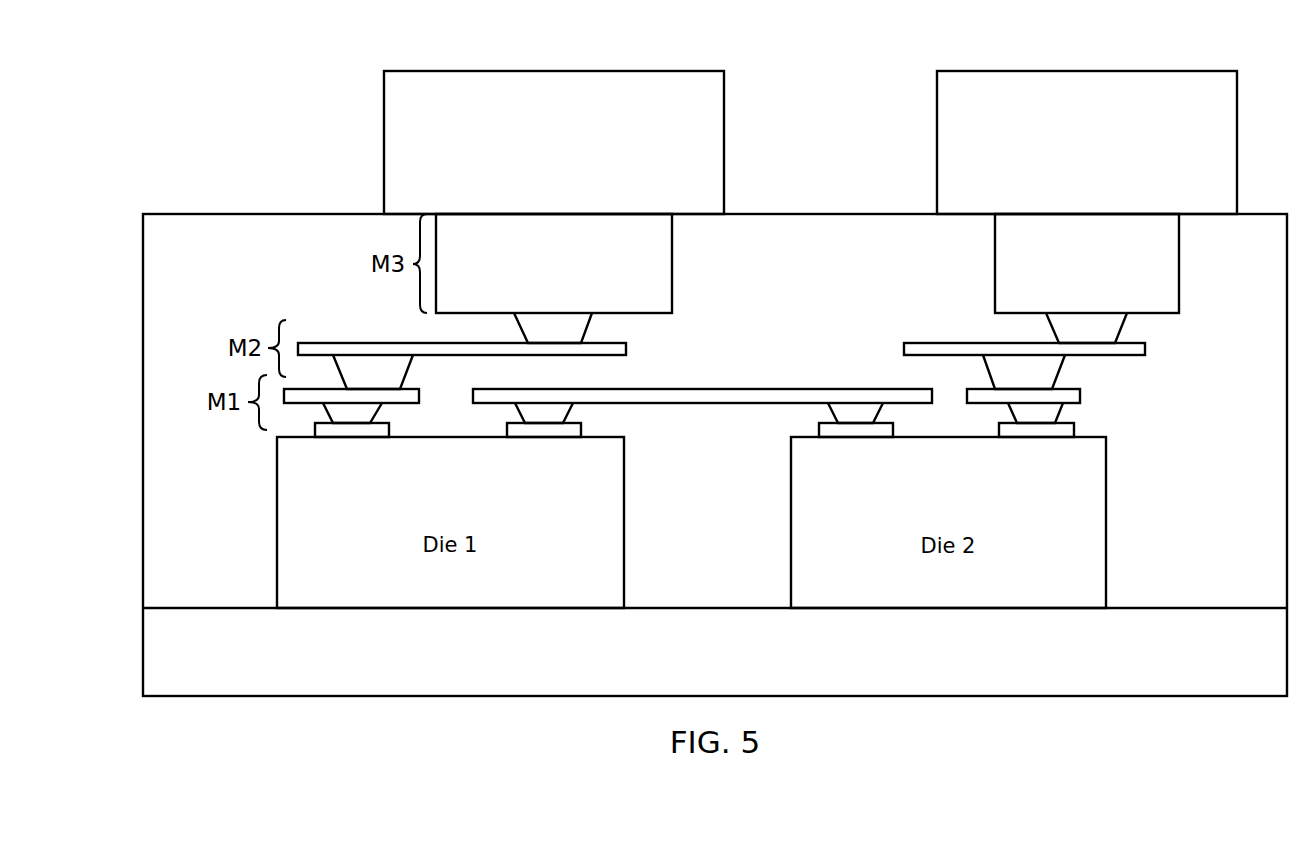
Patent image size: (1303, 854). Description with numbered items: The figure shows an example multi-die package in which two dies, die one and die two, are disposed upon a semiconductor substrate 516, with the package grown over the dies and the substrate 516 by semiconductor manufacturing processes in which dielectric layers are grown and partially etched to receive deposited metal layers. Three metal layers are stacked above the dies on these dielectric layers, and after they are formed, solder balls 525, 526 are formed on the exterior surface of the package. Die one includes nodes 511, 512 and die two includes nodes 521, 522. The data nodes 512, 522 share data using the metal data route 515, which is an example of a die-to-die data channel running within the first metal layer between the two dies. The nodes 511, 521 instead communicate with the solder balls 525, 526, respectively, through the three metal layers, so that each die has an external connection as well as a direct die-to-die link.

The node 511 is at (352, 437).
The data node 512 is at (545, 437).
The metal data route 515 is at (768, 389).
The semiconductor substrate 516 is at (143, 652).
The node 521 is at (1036, 437).
The data node 522 is at (856, 437).
The solder ball 525 is at (552, 71).
The solder ball 526 is at (1086, 71).